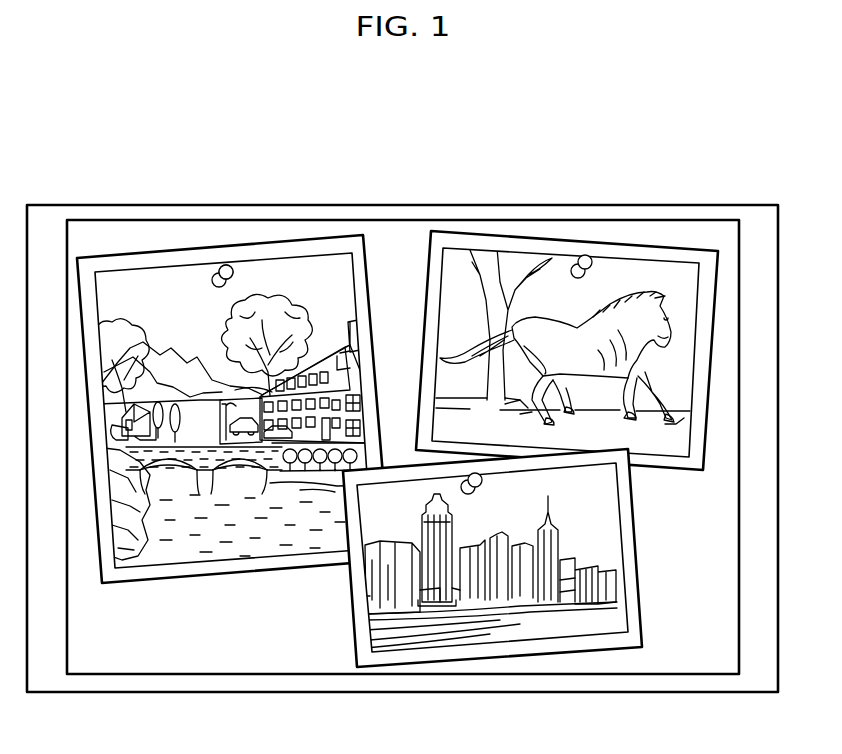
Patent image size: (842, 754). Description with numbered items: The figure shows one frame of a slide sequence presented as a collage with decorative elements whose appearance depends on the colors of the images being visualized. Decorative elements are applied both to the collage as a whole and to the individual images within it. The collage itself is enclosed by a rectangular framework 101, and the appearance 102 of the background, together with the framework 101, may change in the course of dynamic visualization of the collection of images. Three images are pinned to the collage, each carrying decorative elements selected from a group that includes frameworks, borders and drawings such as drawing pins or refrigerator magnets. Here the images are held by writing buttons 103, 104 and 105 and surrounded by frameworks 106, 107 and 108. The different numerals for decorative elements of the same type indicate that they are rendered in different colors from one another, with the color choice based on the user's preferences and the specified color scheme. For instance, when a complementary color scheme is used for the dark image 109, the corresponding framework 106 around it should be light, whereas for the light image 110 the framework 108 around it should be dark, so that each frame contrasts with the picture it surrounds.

The rectangular framework 101 is at (758, 226).
The appearance of a background 102 is at (397, 247).
The writing button 103 is at (226, 265).
The writing button 104 is at (585, 256).
The writing button 105 is at (482, 478).
The framework 106 is at (305, 247).
The framework 107 is at (655, 250).
The framework 108 is at (630, 580).
The dark image 109 is at (145, 286).
The light image 110 is at (602, 527).